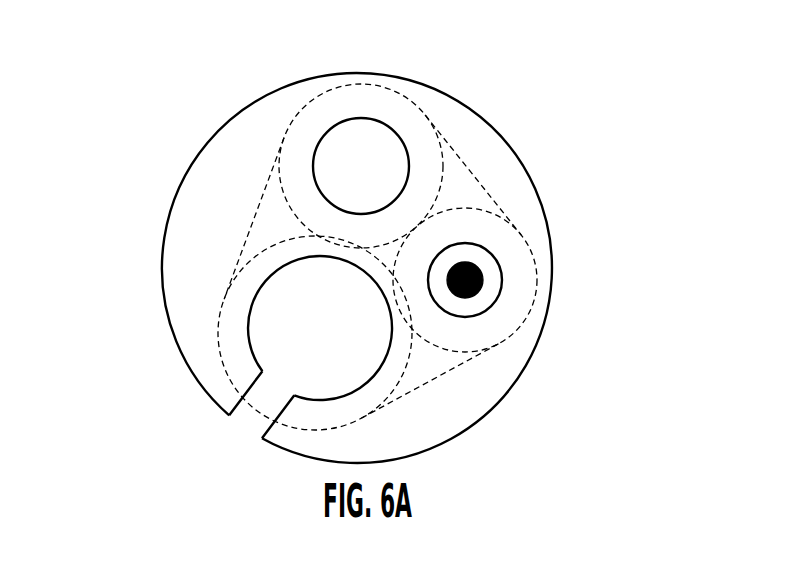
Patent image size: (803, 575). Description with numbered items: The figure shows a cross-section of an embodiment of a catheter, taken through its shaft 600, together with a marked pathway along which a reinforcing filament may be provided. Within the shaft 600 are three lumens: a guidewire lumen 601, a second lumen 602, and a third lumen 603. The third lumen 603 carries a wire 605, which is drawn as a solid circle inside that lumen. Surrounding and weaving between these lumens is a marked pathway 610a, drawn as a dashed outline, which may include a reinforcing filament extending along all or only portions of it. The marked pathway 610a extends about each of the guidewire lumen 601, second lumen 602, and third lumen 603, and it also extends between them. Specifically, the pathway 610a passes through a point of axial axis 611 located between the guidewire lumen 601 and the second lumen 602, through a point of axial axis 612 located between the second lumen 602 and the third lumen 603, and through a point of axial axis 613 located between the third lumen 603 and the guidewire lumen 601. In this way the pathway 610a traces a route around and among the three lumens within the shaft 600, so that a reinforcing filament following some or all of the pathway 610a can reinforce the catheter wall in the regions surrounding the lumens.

The shaft 600 is at (227, 122).
The guidewire lumen 601 is at (288, 324).
The second lumen 602 is at (363, 167).
The third lumen 603 is at (483, 261).
The wire 605 is at (483, 282).
The marked pathway 610a is at (438, 132).
The point of axial axis 611 is at (317, 238).
The point of axial axis 612 is at (430, 217).
The point of axial axis 613 is at (400, 308).